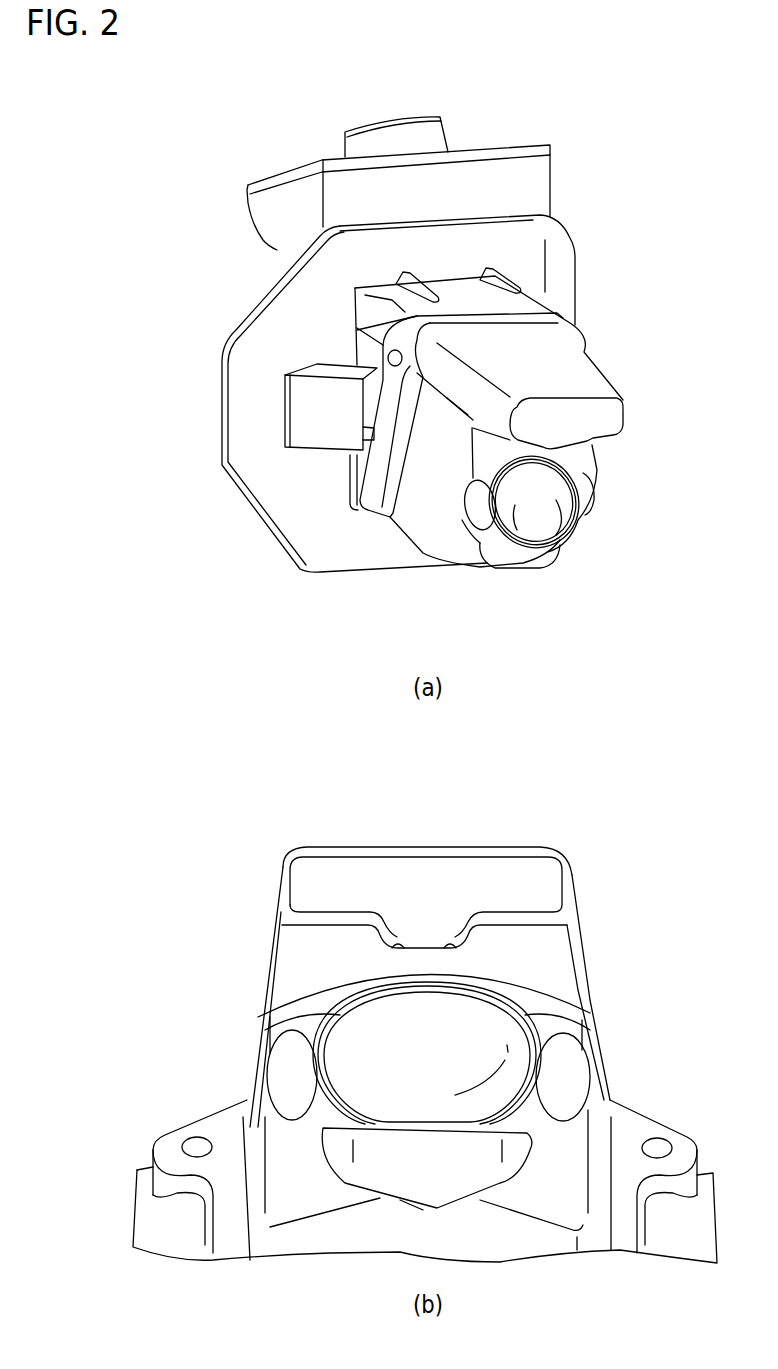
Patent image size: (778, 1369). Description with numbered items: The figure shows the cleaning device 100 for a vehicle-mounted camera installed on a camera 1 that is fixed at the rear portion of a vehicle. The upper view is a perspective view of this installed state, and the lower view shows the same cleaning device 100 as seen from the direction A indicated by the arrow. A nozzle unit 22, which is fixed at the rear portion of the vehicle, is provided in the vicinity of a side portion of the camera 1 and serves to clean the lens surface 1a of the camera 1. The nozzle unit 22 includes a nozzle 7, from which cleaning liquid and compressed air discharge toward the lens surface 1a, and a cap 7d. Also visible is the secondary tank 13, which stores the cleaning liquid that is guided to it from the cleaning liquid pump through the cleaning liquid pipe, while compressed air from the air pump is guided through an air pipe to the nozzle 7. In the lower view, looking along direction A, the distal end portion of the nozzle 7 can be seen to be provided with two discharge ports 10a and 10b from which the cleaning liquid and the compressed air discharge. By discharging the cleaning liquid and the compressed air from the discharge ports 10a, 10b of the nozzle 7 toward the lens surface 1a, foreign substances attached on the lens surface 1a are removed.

The cleaning device 100 is at (272, 157).
The secondary tank 13 is at (262, 214).
The nozzle unit 22 is at (220, 318).
The nozzle 7 is at (587, 373).
The cap 7d is at (610, 423).
The camera 1 is at (423, 523).
The lens surface 1a is at (557, 507).
The discharge port 10a is at (403, 940).
The discharge port 10b is at (450, 940).
The viewing direction A is at (482, 577).